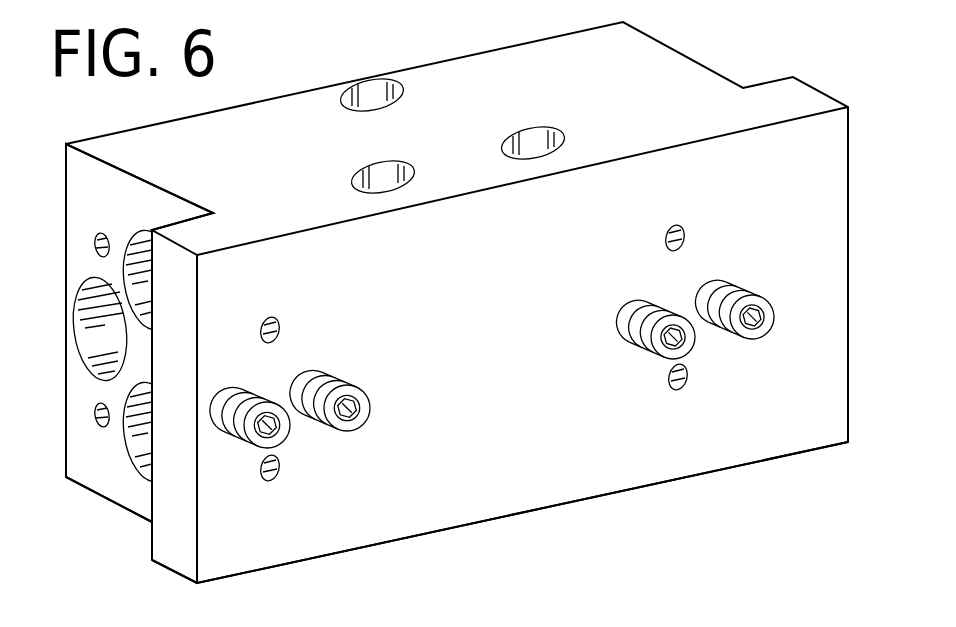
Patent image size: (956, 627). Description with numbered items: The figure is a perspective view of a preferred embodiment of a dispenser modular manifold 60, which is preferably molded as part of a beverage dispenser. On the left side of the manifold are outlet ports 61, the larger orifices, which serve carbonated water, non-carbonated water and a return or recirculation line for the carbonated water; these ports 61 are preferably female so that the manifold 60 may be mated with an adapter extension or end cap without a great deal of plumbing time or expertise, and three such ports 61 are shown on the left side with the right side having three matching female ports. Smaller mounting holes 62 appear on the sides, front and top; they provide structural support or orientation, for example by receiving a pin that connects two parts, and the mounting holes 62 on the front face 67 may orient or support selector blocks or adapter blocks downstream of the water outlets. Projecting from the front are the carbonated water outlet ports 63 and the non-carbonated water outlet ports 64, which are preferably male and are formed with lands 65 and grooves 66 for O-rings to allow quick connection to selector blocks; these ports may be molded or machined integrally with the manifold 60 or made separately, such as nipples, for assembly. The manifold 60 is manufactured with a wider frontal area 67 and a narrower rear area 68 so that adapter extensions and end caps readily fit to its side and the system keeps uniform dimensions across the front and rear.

The dispenser modular manifold 60 is at (716, 471).
The outlet ports 61 is at (60, 356).
The mounting holes 62 is at (392, 170).
The carbonated water outlet ports 63 is at (283, 443).
The non-carbonated water outlet ports 64 is at (360, 430).
The lands 65 is at (247, 385).
The grooves 66 is at (214, 425).
The frontal area 67 is at (163, 574).
The rear area 68 is at (110, 497).